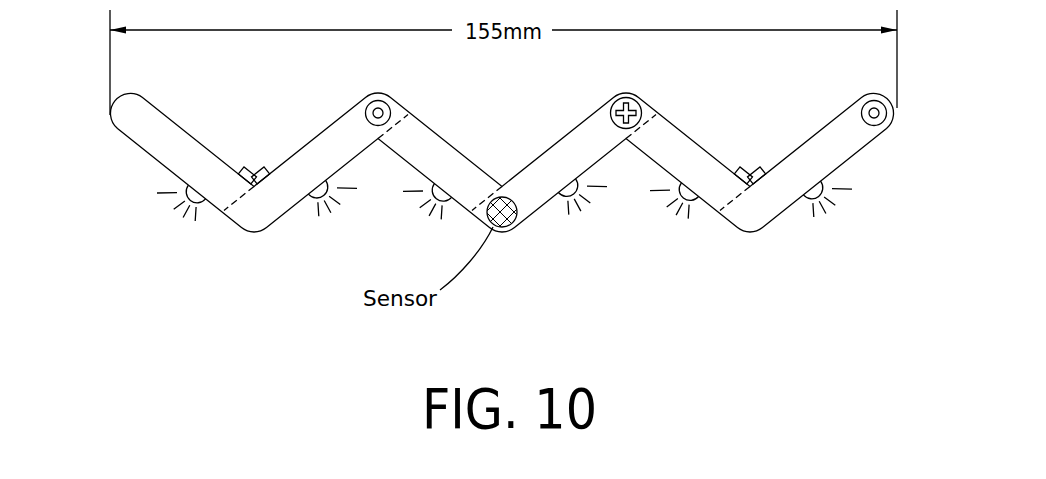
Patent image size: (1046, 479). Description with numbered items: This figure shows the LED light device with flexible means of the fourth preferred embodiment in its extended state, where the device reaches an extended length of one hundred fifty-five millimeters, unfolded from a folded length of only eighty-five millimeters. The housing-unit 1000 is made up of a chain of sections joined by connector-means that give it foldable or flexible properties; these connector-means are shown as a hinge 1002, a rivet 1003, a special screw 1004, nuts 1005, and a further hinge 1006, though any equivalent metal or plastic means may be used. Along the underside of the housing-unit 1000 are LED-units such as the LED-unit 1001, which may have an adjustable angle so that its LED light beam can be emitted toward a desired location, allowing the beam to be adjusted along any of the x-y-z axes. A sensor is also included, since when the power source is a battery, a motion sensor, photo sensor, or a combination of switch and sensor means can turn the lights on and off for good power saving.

The housing-unit 1000 is at (175, 151).
The LED-unit 1001 is at (843, 207).
The hinge 1002 is at (257, 160).
The rivet 1003 is at (397, 99).
The special screw 1004 is at (642, 98).
The nuts 1005 is at (893, 128).
The hinge 1006 is at (753, 163).